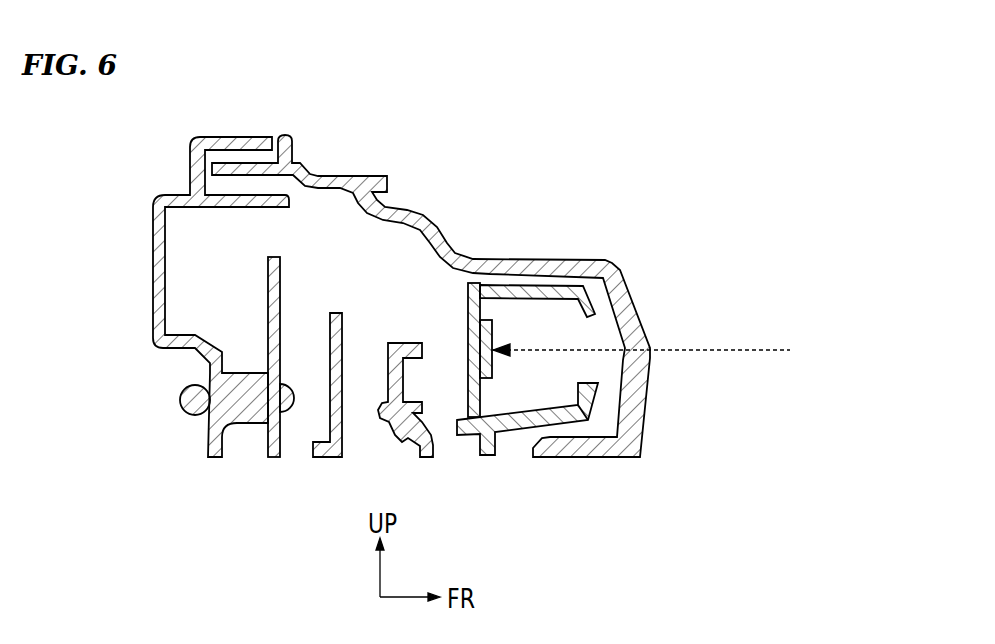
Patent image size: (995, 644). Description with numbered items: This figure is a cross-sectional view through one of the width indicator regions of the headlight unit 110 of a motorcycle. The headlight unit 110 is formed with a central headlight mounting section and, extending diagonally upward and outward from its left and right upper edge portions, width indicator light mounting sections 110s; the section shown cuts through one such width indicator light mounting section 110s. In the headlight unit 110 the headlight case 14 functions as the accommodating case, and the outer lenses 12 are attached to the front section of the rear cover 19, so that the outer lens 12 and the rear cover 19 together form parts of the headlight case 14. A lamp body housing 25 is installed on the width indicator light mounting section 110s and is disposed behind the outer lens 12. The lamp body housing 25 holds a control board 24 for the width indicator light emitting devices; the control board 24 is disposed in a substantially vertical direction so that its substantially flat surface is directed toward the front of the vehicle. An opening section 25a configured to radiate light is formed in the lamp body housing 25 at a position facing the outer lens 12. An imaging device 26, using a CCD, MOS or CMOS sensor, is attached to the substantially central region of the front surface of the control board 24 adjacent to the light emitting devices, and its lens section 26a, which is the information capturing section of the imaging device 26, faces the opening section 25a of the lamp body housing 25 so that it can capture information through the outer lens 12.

The outer lens 12 is at (637, 377).
The headlight case 14 is at (412, 296).
The rear cover 19 is at (150, 283).
The control board 24 is at (468, 323).
The lamp body housing 25 is at (596, 460).
The opening section 25a is at (597, 382).
The imaging device 26 is at (508, 302).
The lens section 26a is at (493, 347).
The headlight unit 110 is at (566, 163).
The width indicator light mounting section 110s is at (643, 303).